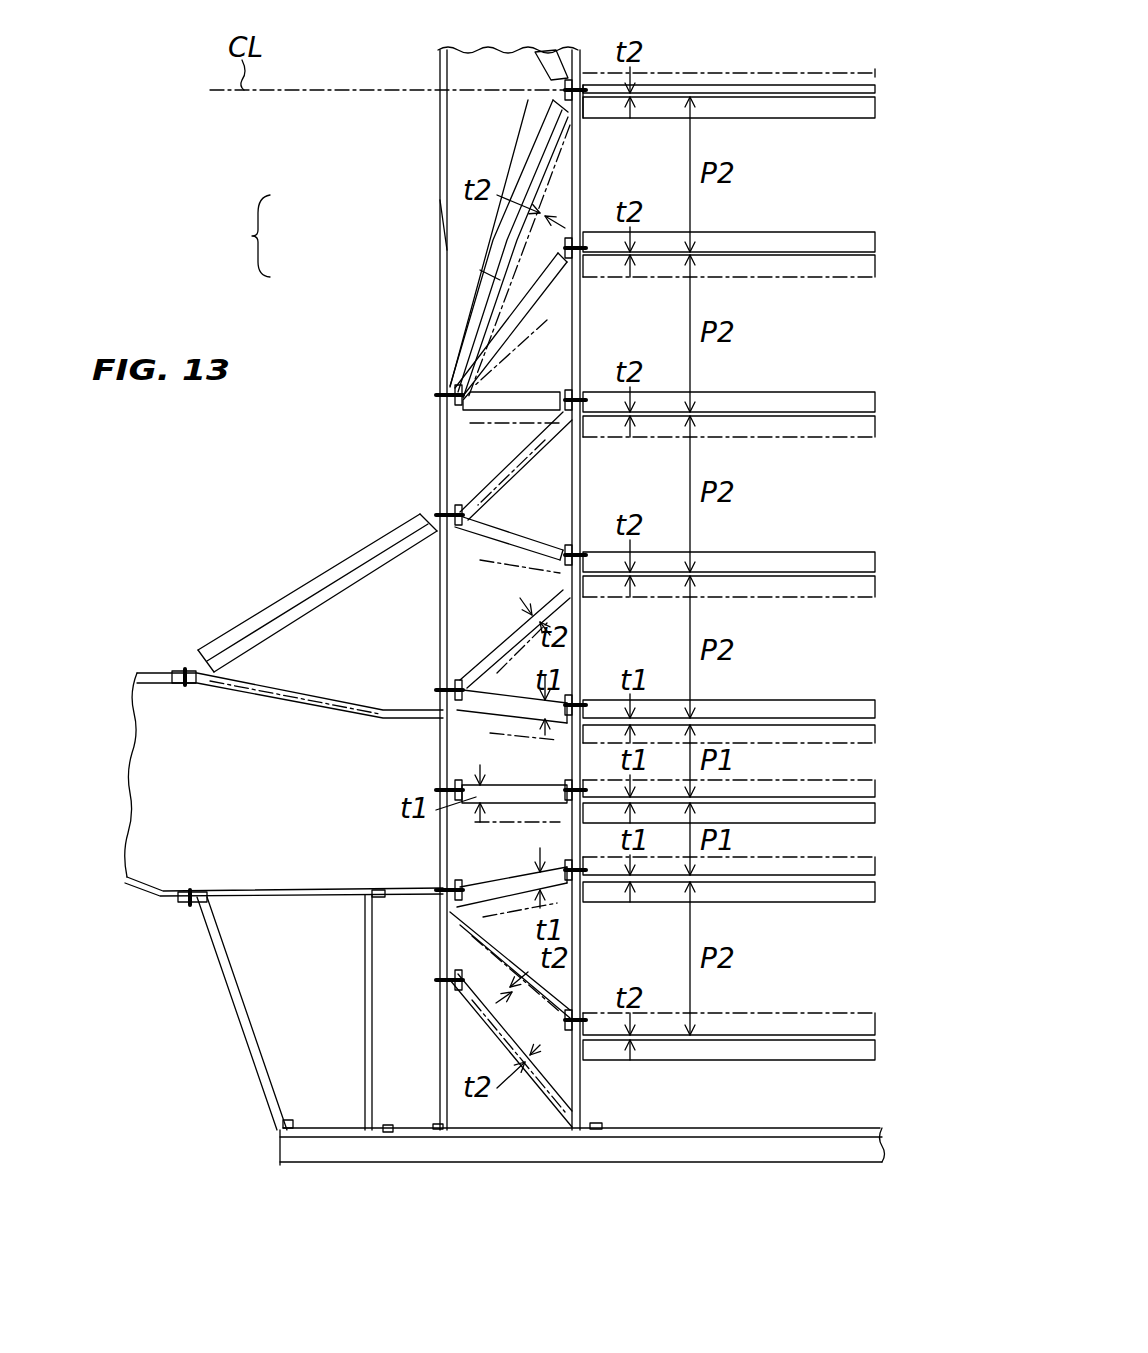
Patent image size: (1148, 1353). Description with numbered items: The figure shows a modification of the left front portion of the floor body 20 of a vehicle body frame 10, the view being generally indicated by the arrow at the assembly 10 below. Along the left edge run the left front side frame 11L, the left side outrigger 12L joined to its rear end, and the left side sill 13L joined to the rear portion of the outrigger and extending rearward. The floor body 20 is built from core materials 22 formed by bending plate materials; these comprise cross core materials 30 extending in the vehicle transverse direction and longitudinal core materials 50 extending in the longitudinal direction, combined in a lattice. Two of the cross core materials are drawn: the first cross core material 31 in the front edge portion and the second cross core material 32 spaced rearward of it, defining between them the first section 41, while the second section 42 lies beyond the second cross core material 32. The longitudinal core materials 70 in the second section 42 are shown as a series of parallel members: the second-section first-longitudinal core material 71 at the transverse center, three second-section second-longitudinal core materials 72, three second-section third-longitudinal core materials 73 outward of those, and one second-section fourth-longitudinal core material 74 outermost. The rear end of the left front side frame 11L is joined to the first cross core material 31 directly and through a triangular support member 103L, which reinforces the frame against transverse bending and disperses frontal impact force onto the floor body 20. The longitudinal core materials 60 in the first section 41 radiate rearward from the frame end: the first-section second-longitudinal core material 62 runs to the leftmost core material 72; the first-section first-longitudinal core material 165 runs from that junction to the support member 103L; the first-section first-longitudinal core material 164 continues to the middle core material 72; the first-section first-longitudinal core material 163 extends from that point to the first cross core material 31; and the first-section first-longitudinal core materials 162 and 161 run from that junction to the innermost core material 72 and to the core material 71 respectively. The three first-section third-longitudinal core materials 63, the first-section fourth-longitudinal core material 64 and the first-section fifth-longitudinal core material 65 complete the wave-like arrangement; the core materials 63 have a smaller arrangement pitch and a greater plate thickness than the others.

The body frame 10 is at (660, 1197).
The left front side frame 11L is at (152, 692).
The left side outrigger 12L is at (257, 990).
The left side sill 13L is at (862, 1150).
The floor body 20 is at (410, 50).
The core materials 22 is at (240, 236).
The cross core materials 30 is at (432, 224).
The first cross core material 31 is at (440, 128).
The second cross core material 32 is at (572, 170).
The first section 41 is at (503, 70).
The second section 42 is at (786, 72).
The longitudinal core materials 50 is at (458, 271).
The longitudinal core materials in the first section 60 is at (455, 300).
The first-section second-longitudinal core material 62 is at (475, 635).
The first-section third-longitudinal core materials 63 is at (466, 728).
The first-section fourth-longitudinal core material 64 is at (456, 948).
The first-section fifth-longitudinal core material 65 is at (456, 1030).
The longitudinal core materials in the second section 70 is at (882, 112).
The second-section first-longitudinal core material 71 is at (843, 118).
The second-section second-longitudinal core materials 72 is at (845, 277).
The second-section third-longitudinal core materials 73 is at (838, 700).
The second-section fourth-longitudinal core material 74 is at (853, 1040).
The support member 103L is at (274, 649).
The first-section first-longitudinal core material 161 is at (455, 330).
The first-section first-longitudinal core material 162 is at (455, 362).
The first-section first-longitudinal core material 163 is at (465, 418).
The first-section first-longitudinal core material 164 is at (465, 470).
The first-section first-longitudinal core material 165 is at (460, 580).